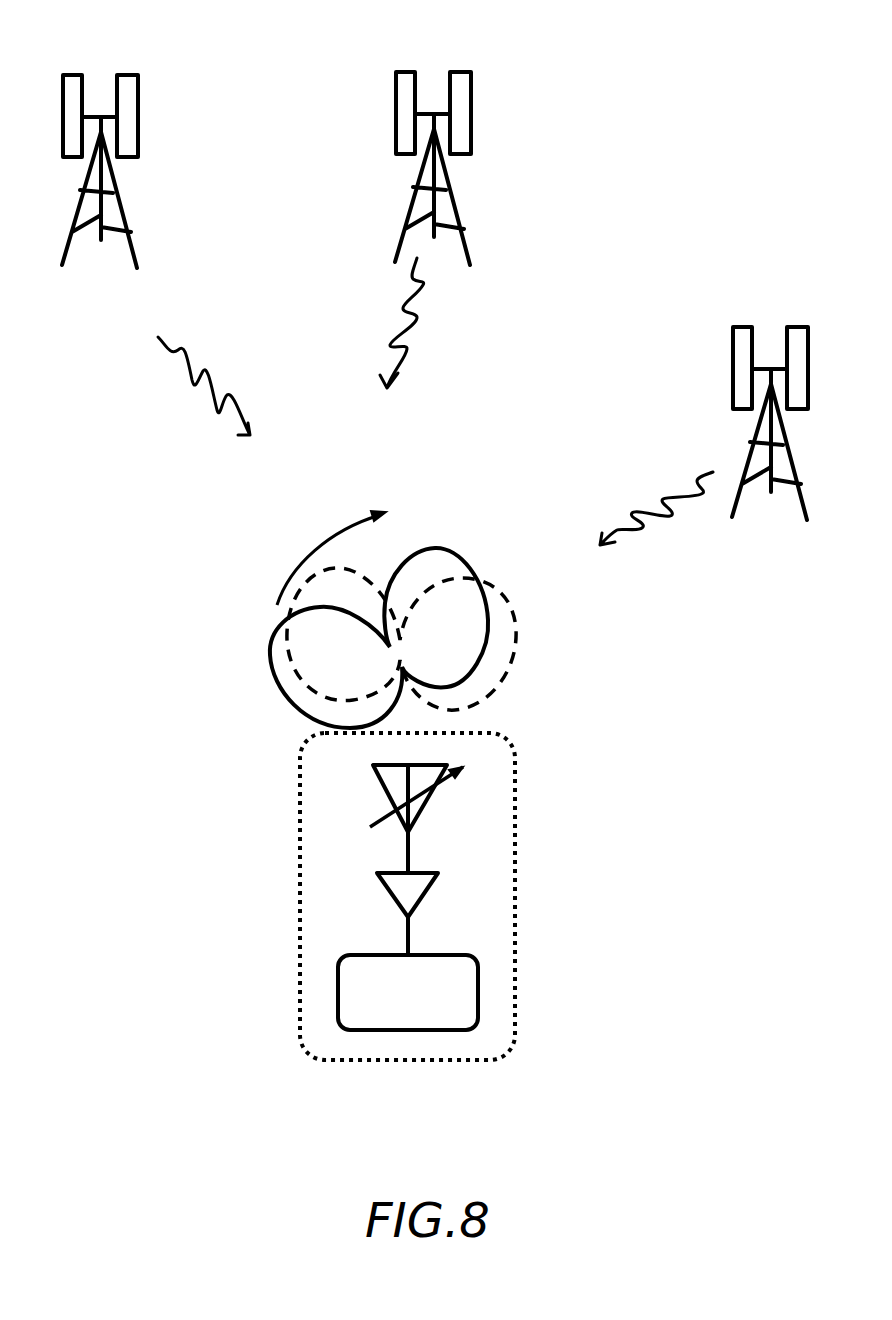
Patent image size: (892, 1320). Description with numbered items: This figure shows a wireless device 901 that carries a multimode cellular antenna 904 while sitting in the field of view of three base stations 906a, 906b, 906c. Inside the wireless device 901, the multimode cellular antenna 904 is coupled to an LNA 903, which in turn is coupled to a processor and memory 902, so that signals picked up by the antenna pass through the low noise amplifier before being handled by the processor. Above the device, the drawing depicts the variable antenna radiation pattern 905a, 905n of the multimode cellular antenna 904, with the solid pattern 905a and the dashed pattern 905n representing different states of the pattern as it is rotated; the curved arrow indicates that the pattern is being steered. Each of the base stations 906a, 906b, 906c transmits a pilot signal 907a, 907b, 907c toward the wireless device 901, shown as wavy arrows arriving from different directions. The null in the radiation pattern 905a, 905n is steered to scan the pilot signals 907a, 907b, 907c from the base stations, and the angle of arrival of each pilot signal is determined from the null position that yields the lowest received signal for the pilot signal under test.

The wireless device 901 is at (403, 1060).
The processor and memory 902 is at (478, 993).
The LNA 903 is at (423, 893).
The multimode cellular antenna 904 is at (435, 783).
The variable antenna radiation pattern 905a is at (468, 555).
The variable antenna radiation pattern 905n is at (507, 652).
The base station 906a is at (138, 98).
The base station 906b is at (467, 100).
The base station 906c is at (732, 348).
The pilot signal 907a is at (213, 377).
The pilot signal 907b is at (417, 317).
The pilot signal 907c is at (640, 512).